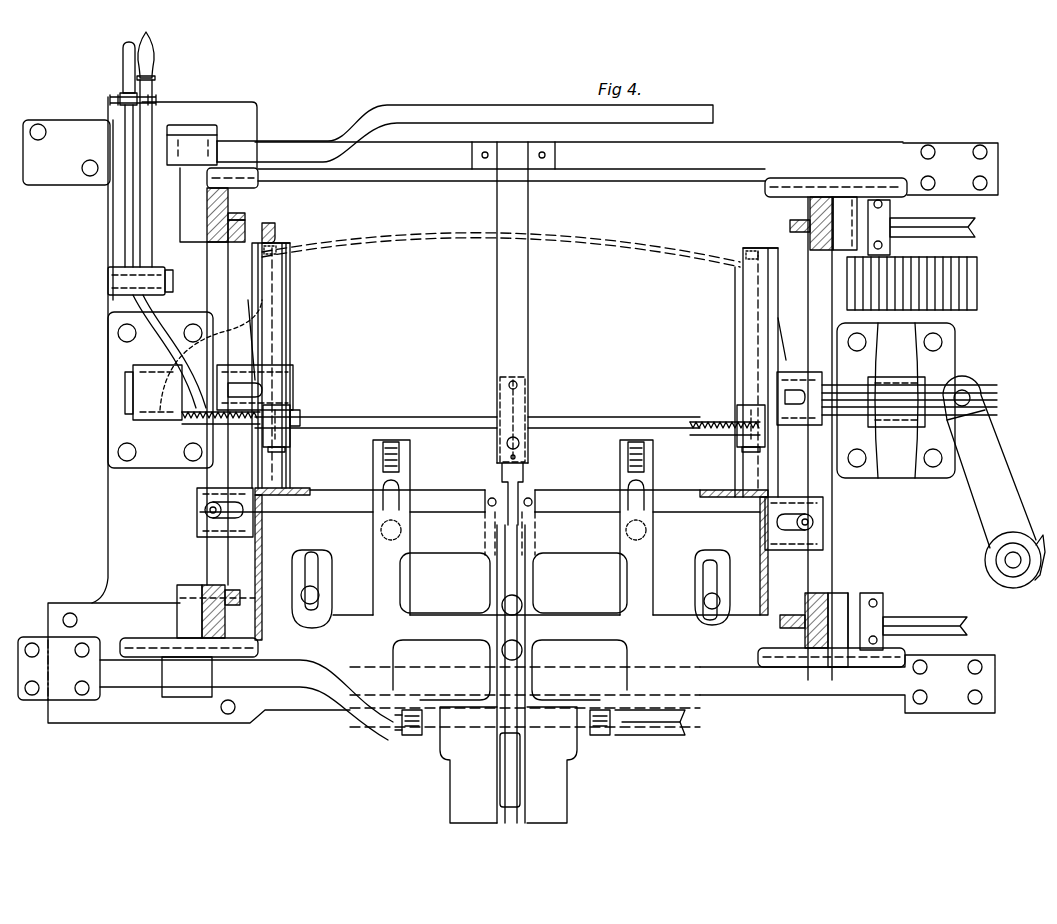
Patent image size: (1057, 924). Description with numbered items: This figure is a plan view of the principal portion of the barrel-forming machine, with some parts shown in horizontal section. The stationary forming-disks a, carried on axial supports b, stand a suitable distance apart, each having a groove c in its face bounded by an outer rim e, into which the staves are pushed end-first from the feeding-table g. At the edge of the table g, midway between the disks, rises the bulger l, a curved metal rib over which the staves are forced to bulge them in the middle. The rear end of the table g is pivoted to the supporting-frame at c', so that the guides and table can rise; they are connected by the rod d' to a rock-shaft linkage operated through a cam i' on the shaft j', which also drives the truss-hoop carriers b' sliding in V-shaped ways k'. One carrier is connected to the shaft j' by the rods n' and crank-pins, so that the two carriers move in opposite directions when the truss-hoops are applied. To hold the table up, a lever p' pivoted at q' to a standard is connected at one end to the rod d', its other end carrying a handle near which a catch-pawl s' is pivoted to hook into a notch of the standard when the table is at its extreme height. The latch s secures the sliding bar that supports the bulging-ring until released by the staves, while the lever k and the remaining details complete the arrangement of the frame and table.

The latch s is at (508, 410).
The catch-pawl s' is at (130, 154).
The lever p' is at (141, 163).
The pivot of lever q' is at (197, 340).
The rods n' is at (406, 422).
The V-shaped ways k' is at (513, 432).
The truss-hoop carriers b' is at (532, 427).
The outer rim e is at (501, 247).
The disks a is at (517, 370).
The post top a' is at (520, 261).
The axial supports b is at (525, 396).
The rod d' is at (477, 411).
The groove c is at (508, 348).
The feeding-table g is at (480, 656).
The shaft j' is at (510, 519).
The cam i' is at (511, 564).
The slot k is at (523, 586).
The table pivot c' is at (502, 734).
The lever l' is at (923, 425).
The bulger l is at (1016, 556).